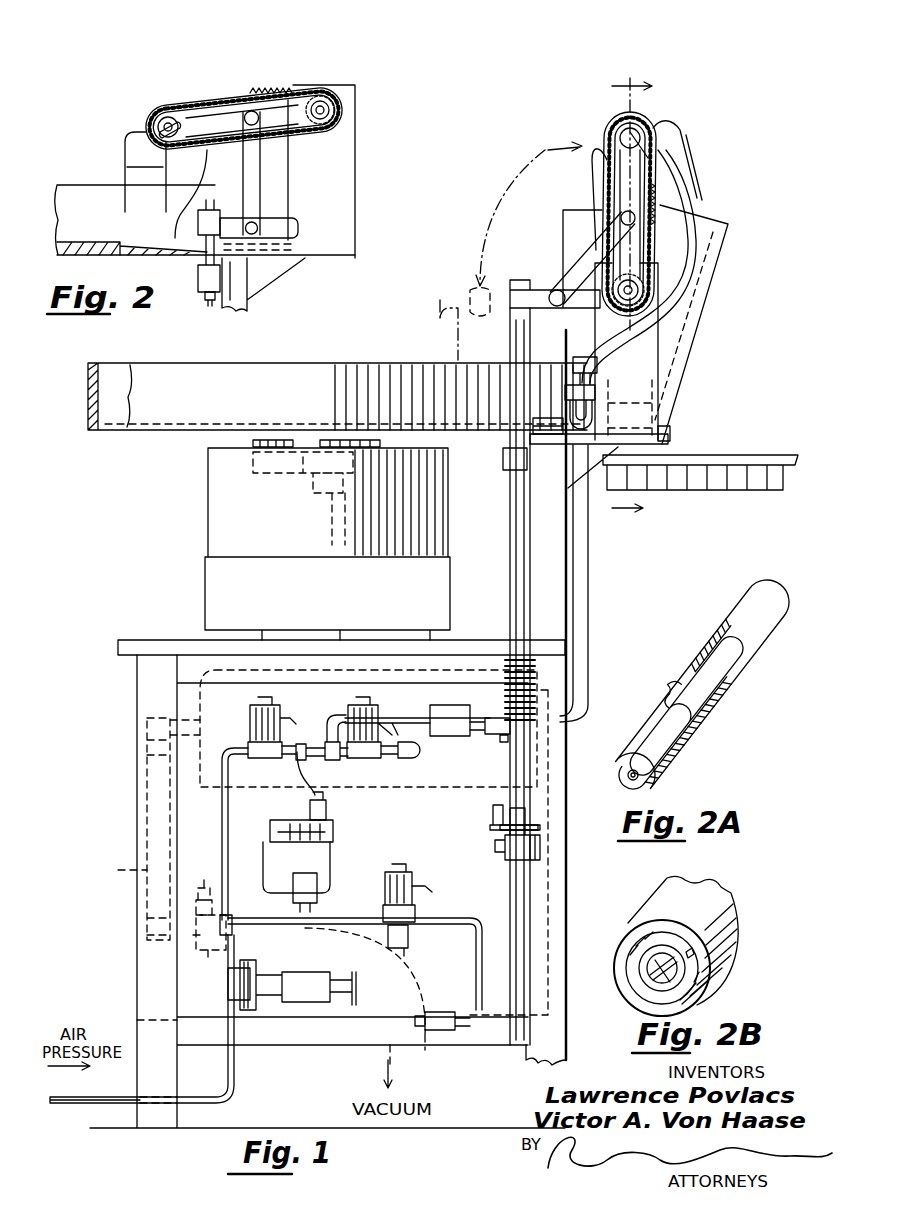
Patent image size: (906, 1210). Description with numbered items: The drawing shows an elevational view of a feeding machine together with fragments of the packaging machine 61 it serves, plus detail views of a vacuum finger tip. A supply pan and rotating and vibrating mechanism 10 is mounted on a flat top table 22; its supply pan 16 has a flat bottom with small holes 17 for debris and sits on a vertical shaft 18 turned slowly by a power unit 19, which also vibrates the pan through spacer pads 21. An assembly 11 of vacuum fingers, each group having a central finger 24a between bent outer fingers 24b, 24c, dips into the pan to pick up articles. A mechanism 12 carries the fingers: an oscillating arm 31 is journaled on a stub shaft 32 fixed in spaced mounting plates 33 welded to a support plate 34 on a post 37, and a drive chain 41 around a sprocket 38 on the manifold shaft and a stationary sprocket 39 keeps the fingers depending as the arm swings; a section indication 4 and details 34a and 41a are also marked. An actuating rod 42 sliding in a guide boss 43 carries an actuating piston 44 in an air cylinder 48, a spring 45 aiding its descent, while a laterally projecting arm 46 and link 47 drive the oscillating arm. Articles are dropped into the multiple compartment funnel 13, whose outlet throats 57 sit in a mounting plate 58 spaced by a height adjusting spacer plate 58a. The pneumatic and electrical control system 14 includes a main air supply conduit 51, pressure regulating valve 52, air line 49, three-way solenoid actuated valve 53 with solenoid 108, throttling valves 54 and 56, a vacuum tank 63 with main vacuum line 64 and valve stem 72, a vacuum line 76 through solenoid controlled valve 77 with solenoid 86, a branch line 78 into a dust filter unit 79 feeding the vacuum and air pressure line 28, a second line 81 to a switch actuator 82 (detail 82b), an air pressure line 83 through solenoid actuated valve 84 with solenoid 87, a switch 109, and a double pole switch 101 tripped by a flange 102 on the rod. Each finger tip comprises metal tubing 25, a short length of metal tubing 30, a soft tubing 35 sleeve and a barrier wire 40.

In FIG. 1, the section line 4- 4 is at (632, 295).
In FIG. 2, the supply pan and rotating and vibrating mechanism 10 is at (66, 170).
In FIG. 1, the supply pan and rotating and vibrating mechanism 10 is at (192, 450).
In FIG. 2, the assembly of vacuum fingers 11 is at (124, 124).
In FIG. 1, the assembly of vacuum fingers 11 is at (690, 126).
In FIG. 2, the mechanism for supporting and moving the vacuum fingers 12 is at (286, 73).
In FIG. 1, the mechanism for supporting and moving the vacuum fingers 12 is at (596, 115).
In FIG. 1, the multiple compartment funnel 13 is at (752, 248).
In FIG. 1, the pneumatic and electrical control system 14 is at (186, 958).
In FIG. 1, the supply pan 16 is at (346, 363).
In FIG. 1, the small holes 17 is at (95, 430).
In FIG. 1, the vertical shaft 18 is at (312, 490).
In FIG. 1, the power unit 19 is at (208, 532).
In FIG. 1, the spacer pads 21 is at (272, 450).
In FIG. 1, the table 22 is at (120, 630).
In FIG. 2, the central finger 24a is at (127, 167).
In FIG. 2, the outer finger 24b is at (118, 200).
In FIG. 1, the outer finger 24b is at (541, 210).
In FIG. 2, the outer finger 24c is at (207, 190).
In FIG. 1, the outer finger 24c is at (690, 162).
In FIG. 2A, the metal tubing 25 is at (722, 628).
In FIG. 2, the vacuum and air pressure line 28 is at (172, 122).
In FIG. 1, the vacuum and air pressure line 28 is at (697, 272).
In FIG. 2A, the short length of metal tubing 30 is at (665, 705).
In FIG. 2B, the short length of metal tubing 30 is at (670, 952).
In FIG. 2, the oscillating arm 31 is at (226, 112).
In FIG. 1, the oscillating arm 31 is at (620, 190).
In FIG. 2, the stub shaft 32 is at (326, 113).
In FIG. 1, the stub shaft 32 is at (628, 300).
In FIG. 2, the mounting plates 33 is at (345, 185).
In FIG. 1, the mounting plates 33 is at (665, 328).
In FIG. 1, the support plate 34 is at (672, 445).
In FIG. 2, the bracket 34a is at (233, 300).
In FIG. 1, the bracket 34a is at (538, 418).
In FIG. 2A, the soft tubing 35 is at (688, 752).
In FIG. 2B, the soft tubing 35 is at (740, 958).
In FIG. 2, the post 37 is at (250, 290).
In FIG. 1, the post 37 is at (568, 582).
In FIG. 2, the sprocket 38 is at (165, 117).
In FIG. 1, the sprocket 38 is at (622, 128).
In FIG. 2, the sprocket 39 is at (334, 102).
In FIG. 1, the sprocket 39 is at (640, 300).
In FIG. 2B, the wire 40 is at (652, 972).
In FIG. 2, the drive chain 41 is at (272, 138).
In FIG. 1, the drive chain 41 is at (655, 252).
In FIG. 2, the spring 41a is at (255, 90).
In FIG. 1, the spring 41a is at (660, 205).
In FIG. 2, the actuating rod 42 is at (205, 298).
In FIG. 1, the actuating rod 42 is at (510, 548).
In FIG. 2, the guide boss 43 is at (198, 280).
In FIG. 1, the guide boss 43 is at (503, 466).
In FIG. 1, the actuating piston 44 is at (550, 872).
In FIG. 1, the spring 45 is at (535, 685).
In FIG. 2, the laterally projecting arm 46 is at (278, 220).
In FIG. 1, the laterally projecting arm 46 is at (542, 290).
In FIG. 2, the link 47 is at (262, 173).
In FIG. 1, the link 47 is at (590, 252).
In FIG. 1, the air cylinder 48 is at (505, 858).
In FIG. 1, the air line 49 is at (335, 920).
In FIG. 1, the main air supply conduit 51 is at (216, 1090).
In FIG. 1, the pressure regulating valve 52 is at (272, 1000).
In FIG. 1, the three-way solenoid actuated valve 53 is at (416, 904).
In FIG. 1, the throttling valve 54 is at (440, 1032).
In FIG. 1, the throttling valve 56 is at (410, 940).
In FIG. 1, the outlet throat 57 is at (660, 398).
In FIG. 1, the mounting plate 58 is at (668, 420).
In FIG. 1, the height adjusting spacer plate 58a is at (676, 432).
In FIG. 1, the packaging machine 61 is at (698, 500).
In FIG. 1, the vacuum tank 63 is at (147, 800).
In FIG. 1, the main vacuum line 64 is at (118, 870).
In FIG. 1, the valve stem 72 is at (204, 880).
In FIG. 1, the vacuum line 76 is at (398, 750).
In FIG. 1, the solenoid controlled valve 77 is at (388, 758).
In FIG. 1, the branch line 78 is at (396, 722).
In FIG. 1, the dust filter unit 79 is at (596, 404).
In FIG. 1, the second line 81 is at (302, 760).
In FIG. 1, the switch actuator 82 is at (350, 838).
In FIG. 1, the regulator inlet 82b is at (318, 805).
In FIG. 1, the air pressure line 83 is at (222, 835).
In FIG. 1, the solenoid actuated valve 84 is at (272, 758).
In FIG. 1, the solenoid 86 is at (358, 718).
In FIG. 1, the solenoid 87 is at (252, 712).
In FIG. 1, the double pole switch 101 is at (470, 706).
In FIG. 1, the flange 102 is at (495, 736).
In FIG. 1, the solenoid 108 is at (412, 885).
In FIG. 1, the switch 109 is at (318, 885).